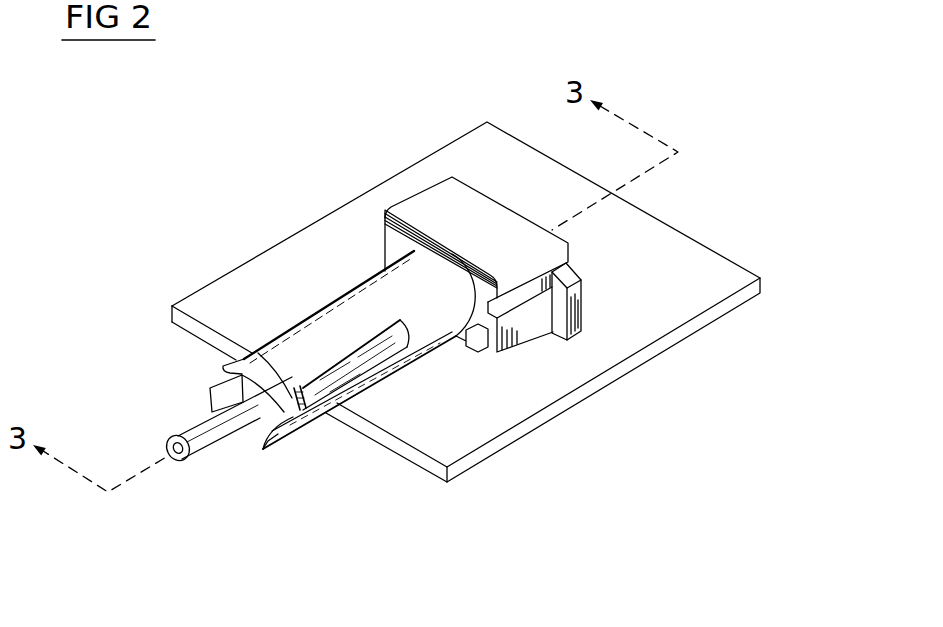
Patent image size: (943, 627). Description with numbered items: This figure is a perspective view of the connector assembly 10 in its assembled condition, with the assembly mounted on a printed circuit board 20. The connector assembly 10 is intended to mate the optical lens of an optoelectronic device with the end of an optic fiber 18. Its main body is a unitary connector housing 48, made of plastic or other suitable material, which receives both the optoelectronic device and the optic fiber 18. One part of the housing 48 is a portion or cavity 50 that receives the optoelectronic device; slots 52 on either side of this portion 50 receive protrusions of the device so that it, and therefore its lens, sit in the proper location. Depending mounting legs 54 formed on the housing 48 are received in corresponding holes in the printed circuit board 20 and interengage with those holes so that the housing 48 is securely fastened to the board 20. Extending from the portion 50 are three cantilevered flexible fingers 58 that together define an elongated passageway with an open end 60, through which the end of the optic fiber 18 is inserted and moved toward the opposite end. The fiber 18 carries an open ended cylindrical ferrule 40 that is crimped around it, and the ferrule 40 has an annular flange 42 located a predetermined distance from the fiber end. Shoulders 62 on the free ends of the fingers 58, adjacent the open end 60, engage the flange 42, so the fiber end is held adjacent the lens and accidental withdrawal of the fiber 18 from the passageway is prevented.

The connector assembly 10 is at (374, 196).
The optic fiber 18 is at (215, 462).
The printed circuit board 20 is at (704, 268).
The ferrule 40 is at (367, 363).
The annular flange 42 is at (263, 455).
The connector housing 48 is at (360, 272).
The portion or cavity 50 is at (460, 207).
The slots 52 is at (531, 288).
The mounting legs 54 is at (578, 310).
The cantilevered flexible fingers 58 is at (290, 358).
The open end 60 is at (205, 415).
The shoulders 62 is at (247, 365).